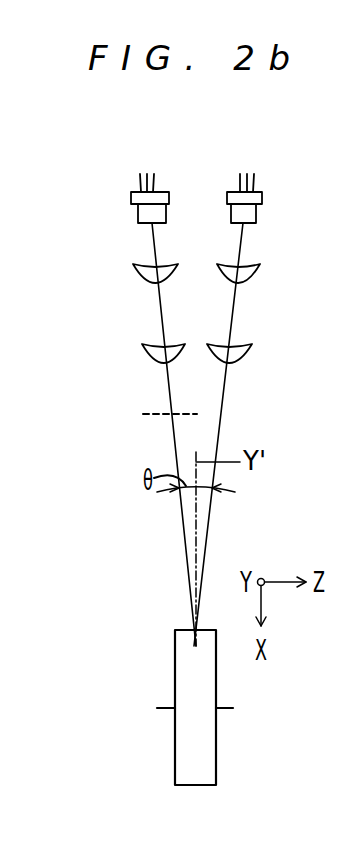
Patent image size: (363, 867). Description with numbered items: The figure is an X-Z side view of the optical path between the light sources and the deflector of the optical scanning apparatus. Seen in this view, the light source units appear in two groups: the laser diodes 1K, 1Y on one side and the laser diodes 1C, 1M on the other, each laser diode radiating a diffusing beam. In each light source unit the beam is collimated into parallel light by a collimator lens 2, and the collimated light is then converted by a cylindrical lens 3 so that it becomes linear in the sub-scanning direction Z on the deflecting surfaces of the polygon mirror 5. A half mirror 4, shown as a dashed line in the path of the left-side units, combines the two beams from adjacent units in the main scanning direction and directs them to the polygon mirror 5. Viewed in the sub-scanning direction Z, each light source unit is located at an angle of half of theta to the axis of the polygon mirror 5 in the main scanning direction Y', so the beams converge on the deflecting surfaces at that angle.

The laser diode 1K is at (94, 205).
The laser diode 1Y is at (138, 210).
The laser diode 1C is at (293, 217).
The laser diode 1M is at (256, 215).
The collimator lens 2 is at (145, 283).
The cylindrical lens 3 is at (152, 363).
The half mirror 4 is at (162, 416).
The polygon mirror 5 is at (175, 752).